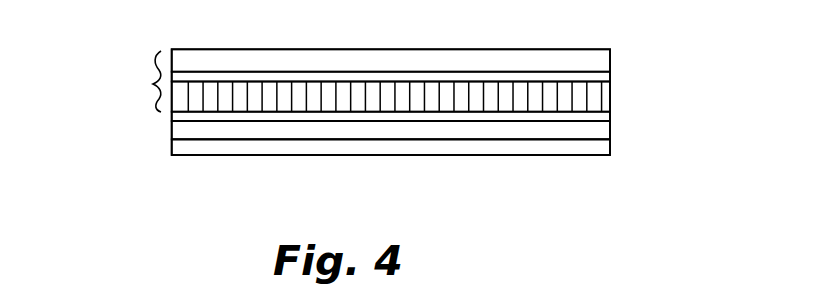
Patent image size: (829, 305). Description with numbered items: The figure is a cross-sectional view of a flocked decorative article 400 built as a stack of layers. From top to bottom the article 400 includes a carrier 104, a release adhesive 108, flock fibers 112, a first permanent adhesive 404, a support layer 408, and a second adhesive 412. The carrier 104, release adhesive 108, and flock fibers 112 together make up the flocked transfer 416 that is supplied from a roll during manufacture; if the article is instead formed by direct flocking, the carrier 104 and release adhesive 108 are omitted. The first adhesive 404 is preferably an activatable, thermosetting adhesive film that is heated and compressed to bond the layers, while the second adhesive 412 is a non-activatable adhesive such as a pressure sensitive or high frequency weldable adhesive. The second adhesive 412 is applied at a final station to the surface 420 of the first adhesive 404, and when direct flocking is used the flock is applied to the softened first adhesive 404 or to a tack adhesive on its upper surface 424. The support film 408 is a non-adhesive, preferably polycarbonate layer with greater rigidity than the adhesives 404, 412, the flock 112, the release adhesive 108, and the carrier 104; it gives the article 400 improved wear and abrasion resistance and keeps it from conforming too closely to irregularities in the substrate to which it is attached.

The article 400 is at (202, 175).
The carrier 104 is at (612, 53).
The release adhesive 108 is at (612, 77).
The flock fibers 112 is at (612, 98).
The first permanent adhesive 404 is at (612, 112).
The support layer 408 is at (612, 132).
The second adhesive 412 is at (588, 155).
The flocked transfer 416 is at (153, 84).
The surface 420 is at (264, 139).
The upper surface 424 is at (320, 121).